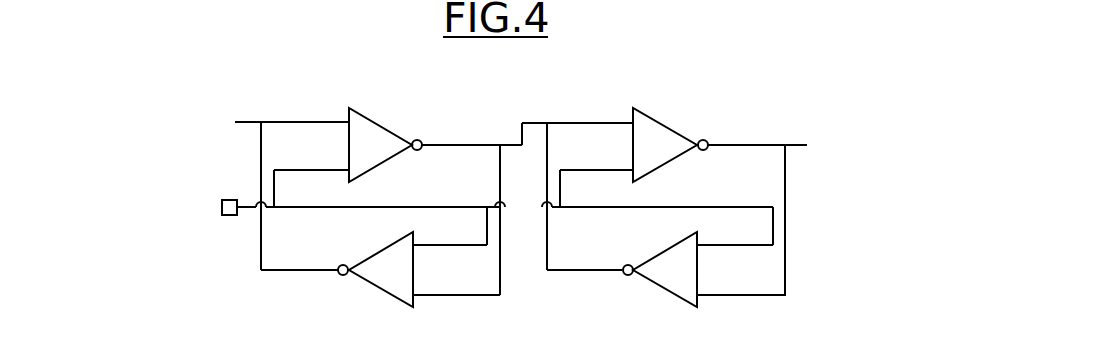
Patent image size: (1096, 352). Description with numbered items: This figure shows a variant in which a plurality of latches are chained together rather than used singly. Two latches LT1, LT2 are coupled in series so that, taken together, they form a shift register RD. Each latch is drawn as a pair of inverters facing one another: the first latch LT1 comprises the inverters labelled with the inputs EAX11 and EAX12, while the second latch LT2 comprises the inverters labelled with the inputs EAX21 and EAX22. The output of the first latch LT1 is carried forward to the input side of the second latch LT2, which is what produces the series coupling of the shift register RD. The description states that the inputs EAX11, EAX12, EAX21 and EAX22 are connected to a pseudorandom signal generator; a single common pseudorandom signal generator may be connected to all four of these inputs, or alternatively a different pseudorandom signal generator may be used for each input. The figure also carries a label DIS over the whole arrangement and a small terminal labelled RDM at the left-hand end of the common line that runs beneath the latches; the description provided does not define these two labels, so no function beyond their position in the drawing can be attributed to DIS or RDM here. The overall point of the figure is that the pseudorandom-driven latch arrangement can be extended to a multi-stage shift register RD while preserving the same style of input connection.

The device DIS is at (593, 93).
The shift register RD is at (785, 327).
The read mode input RDM is at (229, 197).
The latch LT1 is at (402, 112).
The latch LT2 is at (685, 112).
The input EAX11 is at (347, 167).
The input EAX12 is at (413, 246).
The input EAX21 is at (632, 167).
The input EAX22 is at (698, 246).